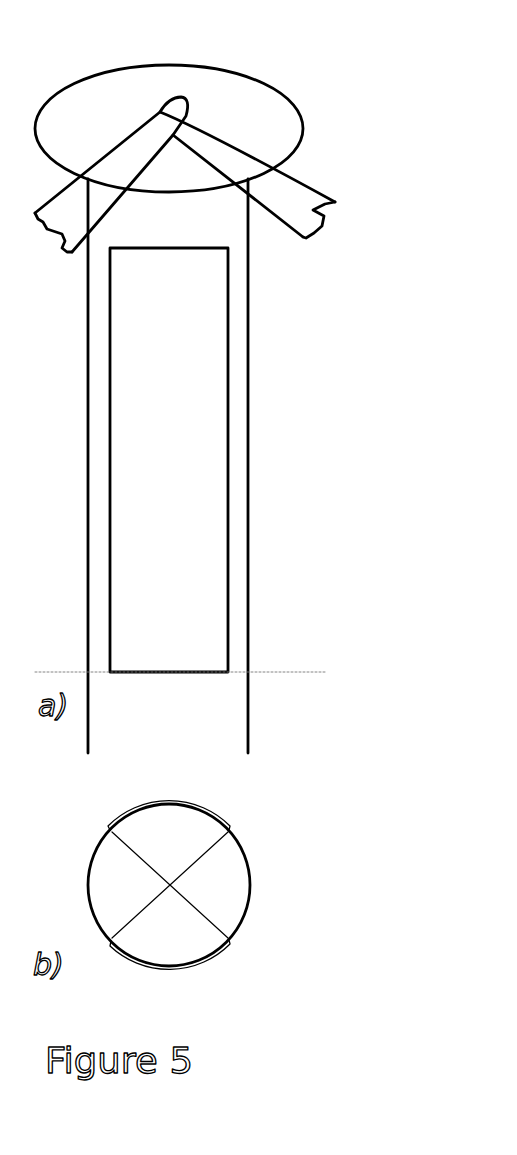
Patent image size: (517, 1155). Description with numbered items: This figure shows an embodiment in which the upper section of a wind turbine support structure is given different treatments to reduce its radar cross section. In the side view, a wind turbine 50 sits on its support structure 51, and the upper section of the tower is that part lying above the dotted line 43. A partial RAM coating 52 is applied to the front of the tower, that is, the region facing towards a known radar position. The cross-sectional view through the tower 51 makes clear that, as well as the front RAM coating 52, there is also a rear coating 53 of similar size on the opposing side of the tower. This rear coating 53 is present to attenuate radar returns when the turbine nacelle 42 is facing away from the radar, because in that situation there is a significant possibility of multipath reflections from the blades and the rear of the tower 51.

The turbine nacelle 42 is at (117, 63).
The wind turbine 50 is at (263, 58).
The support structure 51 is at (250, 335).
The partial RAM coating 52 is at (230, 425).
The rear coating 53 is at (225, 958).
The dotted line 43 is at (307, 668).